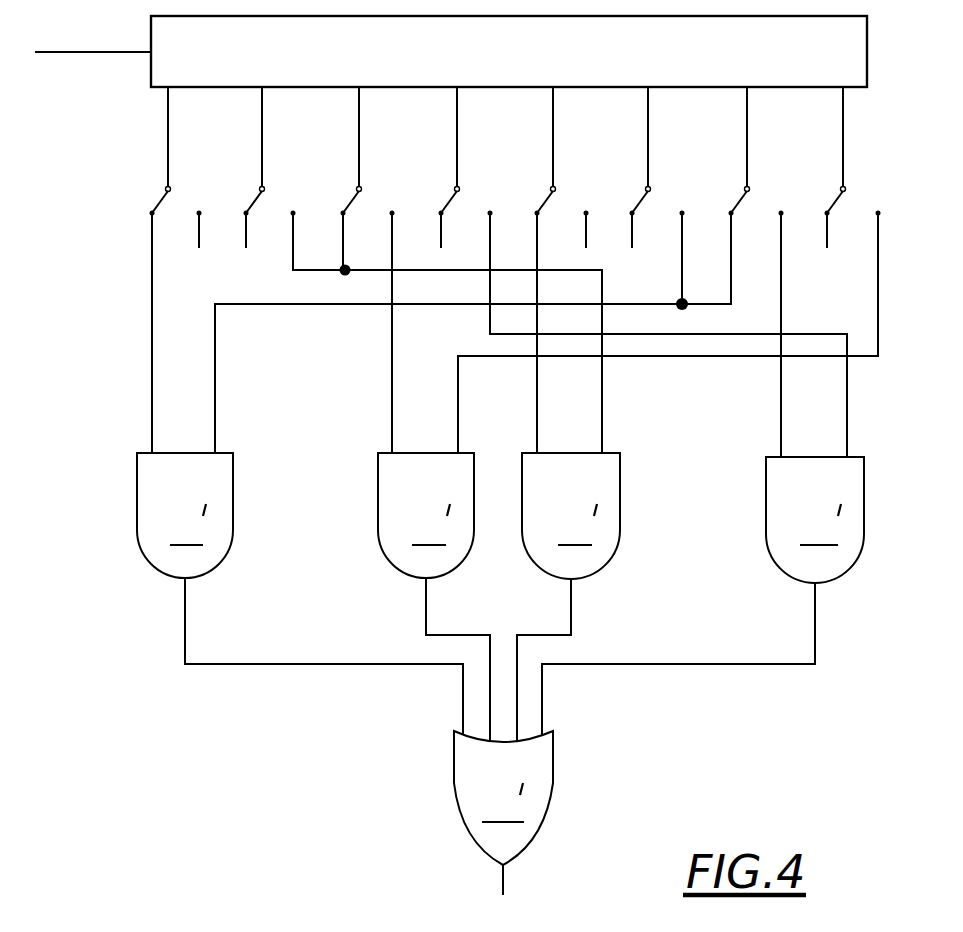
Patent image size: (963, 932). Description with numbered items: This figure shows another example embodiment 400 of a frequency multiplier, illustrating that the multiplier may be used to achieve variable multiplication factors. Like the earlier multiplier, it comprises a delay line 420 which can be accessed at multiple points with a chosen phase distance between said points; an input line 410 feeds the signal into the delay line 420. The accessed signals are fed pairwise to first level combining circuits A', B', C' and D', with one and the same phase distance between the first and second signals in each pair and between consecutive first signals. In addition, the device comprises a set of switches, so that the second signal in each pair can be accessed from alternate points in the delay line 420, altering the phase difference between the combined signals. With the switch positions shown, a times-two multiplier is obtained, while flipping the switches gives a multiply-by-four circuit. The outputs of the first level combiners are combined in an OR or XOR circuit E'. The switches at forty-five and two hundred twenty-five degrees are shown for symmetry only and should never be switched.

The example embodiment 400 is at (824, 6).
The input line 410 is at (48, 54).
The delay line 420 is at (186, 16).